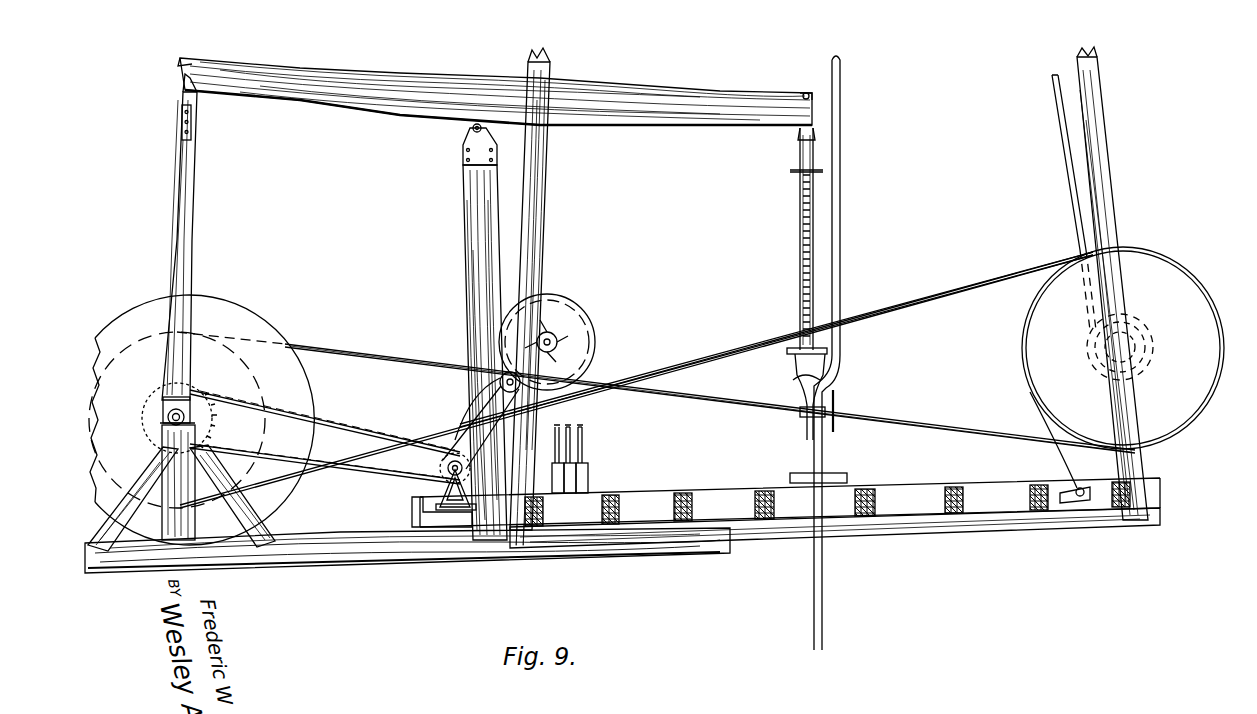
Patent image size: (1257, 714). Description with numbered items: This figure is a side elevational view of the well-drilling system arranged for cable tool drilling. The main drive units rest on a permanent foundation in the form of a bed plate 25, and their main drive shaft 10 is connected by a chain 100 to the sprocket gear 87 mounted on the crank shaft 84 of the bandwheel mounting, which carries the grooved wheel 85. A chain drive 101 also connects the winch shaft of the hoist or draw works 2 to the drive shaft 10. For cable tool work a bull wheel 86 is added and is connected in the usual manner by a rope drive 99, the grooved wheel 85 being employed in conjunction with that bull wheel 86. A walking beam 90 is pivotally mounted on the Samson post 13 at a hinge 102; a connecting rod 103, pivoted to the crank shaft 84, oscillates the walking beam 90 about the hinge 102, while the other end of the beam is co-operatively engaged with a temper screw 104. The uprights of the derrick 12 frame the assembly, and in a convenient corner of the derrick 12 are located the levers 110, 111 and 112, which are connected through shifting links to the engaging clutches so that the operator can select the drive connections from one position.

The hoist or draw works 2 is at (573, 335).
The main drive shaft 10 is at (440, 484).
The derrick 12 is at (540, 233).
The Samson post 13 is at (467, 226).
The bed plate 25 is at (412, 515).
The crank shaft 84 is at (163, 422).
The grooved wheel 85 is at (262, 333).
The bull wheel 86 is at (1042, 368).
The sprocket gear 87 is at (207, 432).
The walking beam 90 is at (367, 98).
The rope drive 99 is at (732, 348).
The chain 100 is at (355, 430).
The chain drive 101 is at (462, 430).
The hinge 102 is at (467, 128).
The connecting rod 103 is at (193, 232).
The temper screw 104 is at (800, 268).
The lever 110 is at (560, 430).
The lever 111 is at (585, 433).
The lever 112 is at (587, 450).